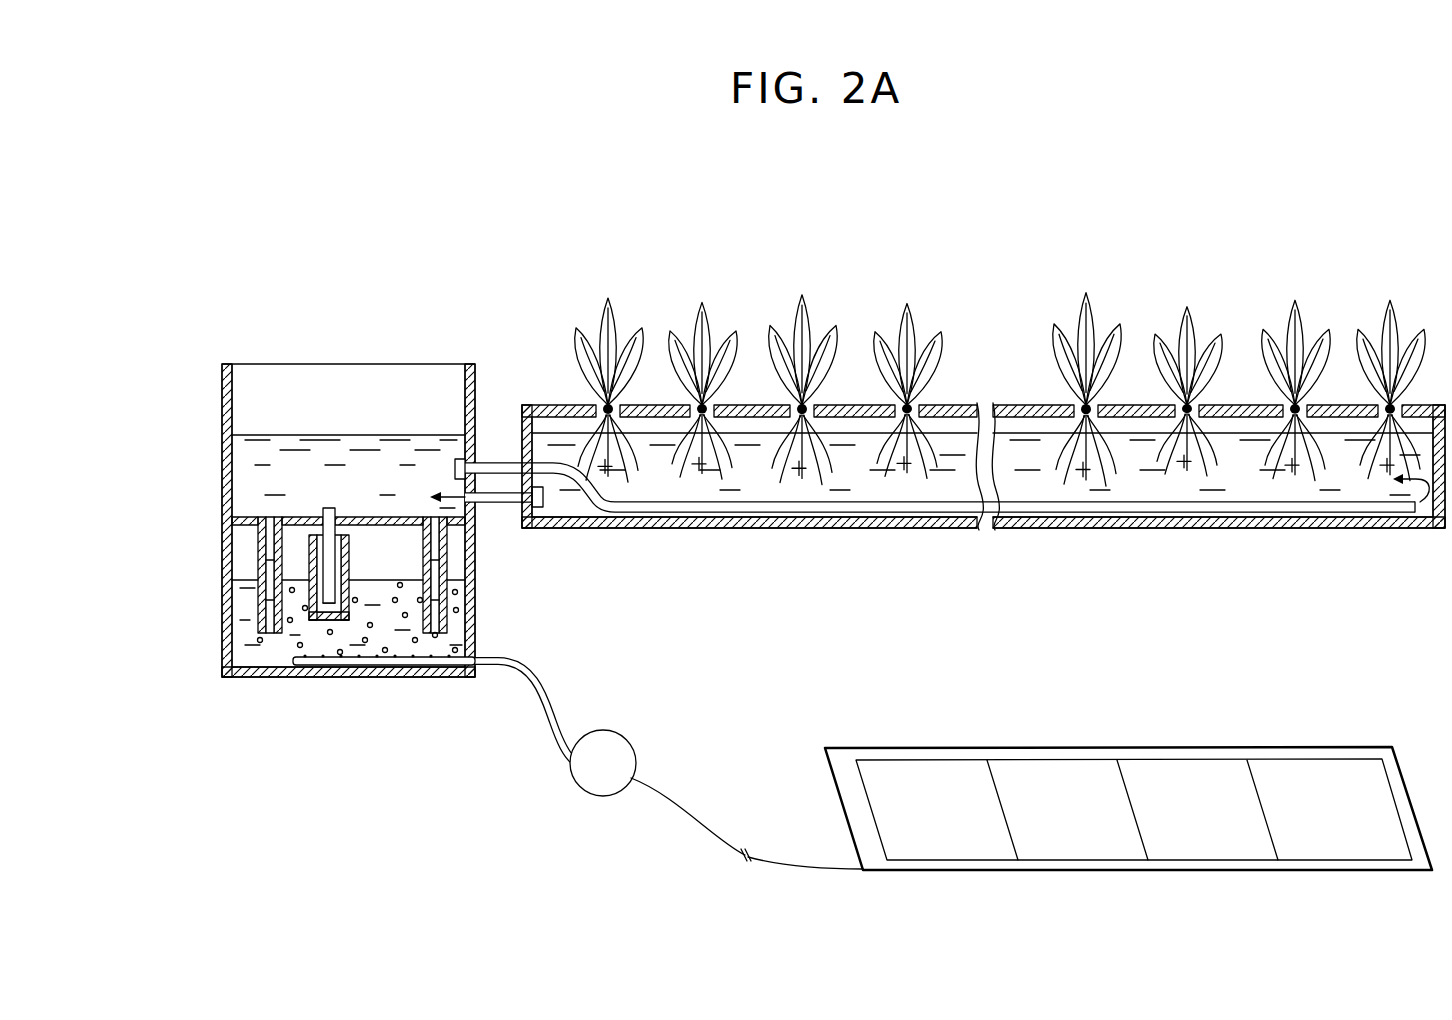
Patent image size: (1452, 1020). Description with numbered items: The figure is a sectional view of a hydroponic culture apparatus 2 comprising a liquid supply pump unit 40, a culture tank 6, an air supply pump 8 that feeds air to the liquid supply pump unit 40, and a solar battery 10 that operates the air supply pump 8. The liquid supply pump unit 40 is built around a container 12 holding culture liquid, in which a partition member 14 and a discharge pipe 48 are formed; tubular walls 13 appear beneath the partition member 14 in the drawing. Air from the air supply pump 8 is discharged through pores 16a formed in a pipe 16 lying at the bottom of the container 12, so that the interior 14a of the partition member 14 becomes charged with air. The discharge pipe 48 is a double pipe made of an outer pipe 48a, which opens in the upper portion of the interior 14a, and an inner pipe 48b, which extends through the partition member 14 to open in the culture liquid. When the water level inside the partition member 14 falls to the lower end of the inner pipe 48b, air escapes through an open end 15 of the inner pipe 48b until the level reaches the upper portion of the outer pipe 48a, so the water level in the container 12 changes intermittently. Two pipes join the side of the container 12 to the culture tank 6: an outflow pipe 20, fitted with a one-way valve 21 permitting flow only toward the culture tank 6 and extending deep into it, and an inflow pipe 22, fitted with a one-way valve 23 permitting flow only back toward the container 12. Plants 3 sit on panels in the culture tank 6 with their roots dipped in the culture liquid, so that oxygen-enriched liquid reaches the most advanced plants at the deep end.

The hydroponic culture apparatus 2 is at (789, 306).
The plants 3 is at (688, 320).
The culture tank 6 is at (1251, 350).
The air supply pump 8 is at (615, 740).
The solar battery 10 is at (1320, 752).
The container 12 is at (222, 418).
The tubular partitions 13 is at (258, 555).
The partition member 14 is at (245, 520).
The interior of the partition member 14a is at (407, 556).
The open end 15 is at (330, 506).
The pipe 16 is at (440, 666).
The pores 16a is at (423, 668).
The outflow pipe 20 is at (497, 462).
The one-way valve 21 is at (452, 461).
The inflow pipe 22 is at (508, 501).
The one-way valve 23 is at (543, 501).
The liquid supply pump unit 40 is at (324, 352).
The discharge pipe 48 is at (309, 597).
The outer pipe 48a is at (303, 620).
The inner pipe 48b is at (333, 605).